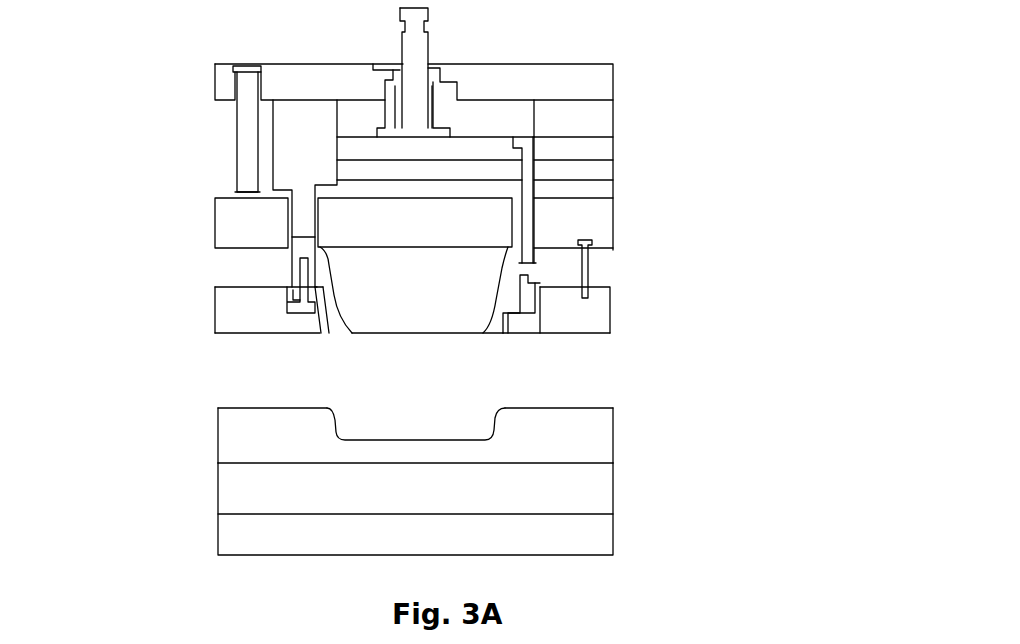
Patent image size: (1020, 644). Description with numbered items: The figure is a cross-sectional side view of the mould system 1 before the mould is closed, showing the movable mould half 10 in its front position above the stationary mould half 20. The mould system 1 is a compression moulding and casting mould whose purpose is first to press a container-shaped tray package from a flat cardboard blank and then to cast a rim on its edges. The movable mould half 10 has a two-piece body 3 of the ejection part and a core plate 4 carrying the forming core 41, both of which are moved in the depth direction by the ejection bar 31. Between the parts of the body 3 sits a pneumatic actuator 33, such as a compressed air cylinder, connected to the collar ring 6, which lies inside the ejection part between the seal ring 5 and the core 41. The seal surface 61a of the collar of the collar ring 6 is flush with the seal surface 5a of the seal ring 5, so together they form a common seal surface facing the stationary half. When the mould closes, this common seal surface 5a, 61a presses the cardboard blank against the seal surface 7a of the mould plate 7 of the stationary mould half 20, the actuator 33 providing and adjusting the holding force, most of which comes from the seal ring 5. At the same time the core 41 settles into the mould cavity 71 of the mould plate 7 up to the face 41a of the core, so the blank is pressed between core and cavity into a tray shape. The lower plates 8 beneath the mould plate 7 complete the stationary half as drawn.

The mould system 1 is at (720, 168).
The movable mould half 10 is at (130, 168).
The body of the ejection part 3 is at (605, 80).
The ejection bar 31 is at (411, 44).
The pneumatic actuator 33 is at (287, 150).
The core plate 4 is at (225, 213).
The seal ring 5 is at (223, 312).
The seal surface of the seal ring 5a is at (257, 333).
The collar ring 6 is at (290, 288).
The seal surface of the collar 61a is at (321, 334).
The core 41 is at (483, 288).
The face of the core 41a is at (500, 282).
The stationary mould half 20 is at (148, 481).
The mould plate 7 is at (235, 440).
The seal surface of the mould plate 7a is at (563, 407).
The mould cavity 71 is at (423, 433).
The lower plates 8 is at (600, 468).